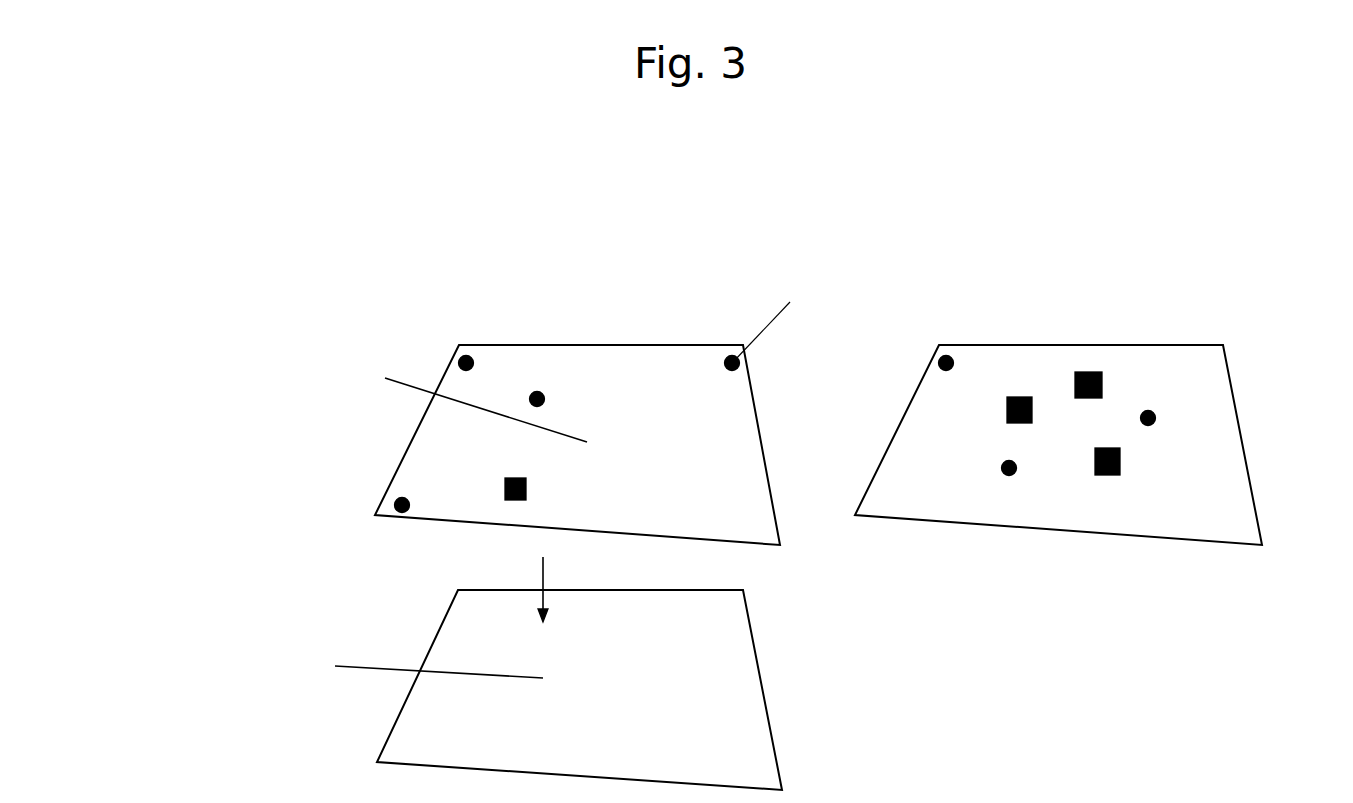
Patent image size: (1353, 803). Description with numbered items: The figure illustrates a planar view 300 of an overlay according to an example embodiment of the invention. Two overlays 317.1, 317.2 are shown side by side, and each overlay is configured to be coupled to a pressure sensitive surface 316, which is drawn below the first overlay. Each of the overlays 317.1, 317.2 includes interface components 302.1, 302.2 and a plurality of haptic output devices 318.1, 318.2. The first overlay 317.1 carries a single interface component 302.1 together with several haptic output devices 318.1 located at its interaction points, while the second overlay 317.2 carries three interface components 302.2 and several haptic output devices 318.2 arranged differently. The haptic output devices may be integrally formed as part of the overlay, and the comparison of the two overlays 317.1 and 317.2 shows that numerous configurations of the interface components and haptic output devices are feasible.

The planar view 300 is at (708, 113).
The pressure sensitive surface 316 is at (760, 677).
The overlay 317.1 is at (842, 401).
The overlay 317.2 is at (1322, 370).
The haptic output devices 318.1 is at (732, 363).
The haptic output devices 318.2 is at (1148, 418).
The interface component 302.1 is at (617, 483).
The interface components 302.2 is at (1088, 398).